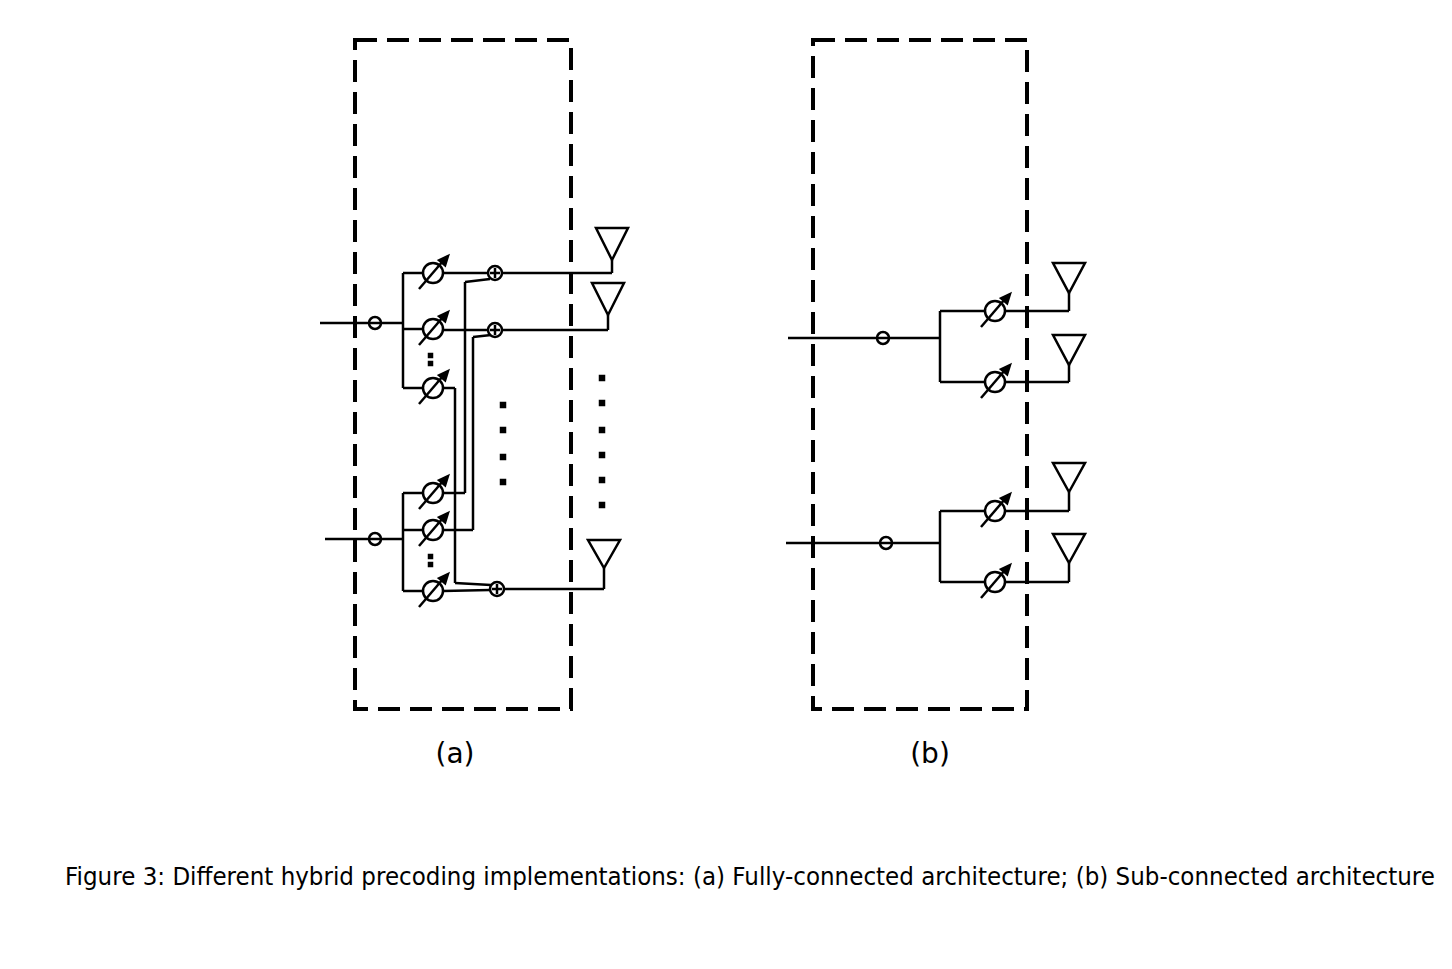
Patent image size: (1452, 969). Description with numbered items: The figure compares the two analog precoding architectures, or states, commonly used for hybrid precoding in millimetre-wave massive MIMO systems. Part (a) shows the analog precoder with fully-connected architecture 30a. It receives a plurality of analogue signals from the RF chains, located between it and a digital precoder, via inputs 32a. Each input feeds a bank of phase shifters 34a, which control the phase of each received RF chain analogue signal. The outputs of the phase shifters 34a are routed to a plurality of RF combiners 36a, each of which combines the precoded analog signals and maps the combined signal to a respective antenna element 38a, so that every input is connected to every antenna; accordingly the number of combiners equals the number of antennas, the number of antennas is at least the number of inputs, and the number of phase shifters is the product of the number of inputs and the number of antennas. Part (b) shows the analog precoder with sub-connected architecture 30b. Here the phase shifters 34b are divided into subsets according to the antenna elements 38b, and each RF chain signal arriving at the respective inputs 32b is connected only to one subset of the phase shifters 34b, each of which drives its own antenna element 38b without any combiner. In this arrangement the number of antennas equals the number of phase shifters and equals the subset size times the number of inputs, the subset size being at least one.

The analog precoder with fully-connected architecture 30a is at (355, 668).
The analog precoder with sub-connected architecture 30b is at (813, 668).
The inputs 32a is at (322, 321).
The inputs 32b is at (790, 337).
The phase shifters 34a is at (435, 250).
The phase shifters 34b is at (981, 300).
The RF combiners 36a is at (495, 264).
The antenna elements 38a is at (606, 227).
The antenna elements 38b is at (1077, 262).